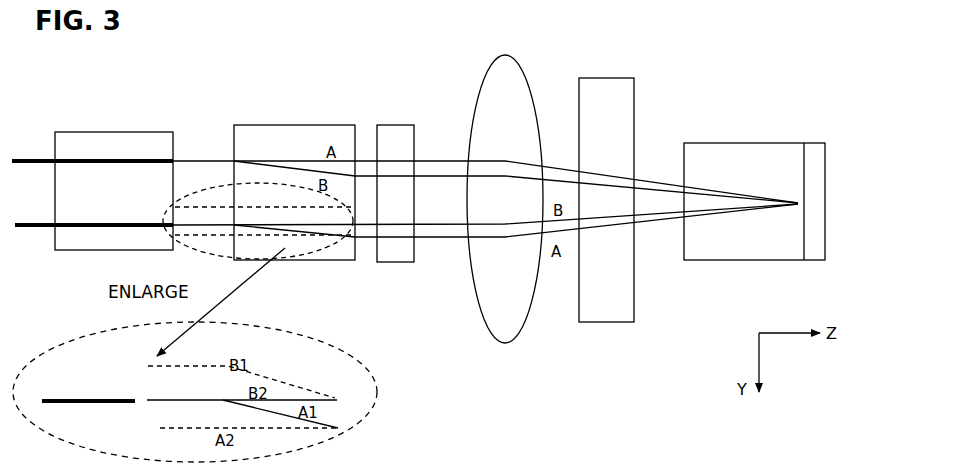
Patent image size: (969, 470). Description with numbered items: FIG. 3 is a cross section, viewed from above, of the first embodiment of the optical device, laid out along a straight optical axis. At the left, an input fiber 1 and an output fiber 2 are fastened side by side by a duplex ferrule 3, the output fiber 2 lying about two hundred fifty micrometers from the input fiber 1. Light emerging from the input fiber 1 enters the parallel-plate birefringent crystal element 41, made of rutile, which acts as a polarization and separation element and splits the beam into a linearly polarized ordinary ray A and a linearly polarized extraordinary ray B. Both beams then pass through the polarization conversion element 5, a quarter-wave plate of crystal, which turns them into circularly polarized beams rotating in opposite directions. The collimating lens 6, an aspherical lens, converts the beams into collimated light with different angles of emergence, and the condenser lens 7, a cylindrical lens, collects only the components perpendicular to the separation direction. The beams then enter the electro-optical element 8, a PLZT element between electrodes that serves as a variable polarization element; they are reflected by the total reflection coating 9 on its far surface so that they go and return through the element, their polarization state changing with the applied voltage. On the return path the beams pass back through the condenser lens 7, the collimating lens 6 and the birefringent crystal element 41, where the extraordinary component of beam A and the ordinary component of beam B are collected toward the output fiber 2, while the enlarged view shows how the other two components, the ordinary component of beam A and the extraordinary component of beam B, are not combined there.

The input fiber 1 is at (92, 144).
The output fiber 2 is at (94, 296).
The duplex ferrule 3 is at (114, 178).
The parallel-plate birefringent crystal element 41 is at (294, 180).
The polarization conversion element 5 is at (395, 209).
The collimating lens 6 is at (505, 190).
The condenser lens 7 is at (606, 187).
The electro-optical element 8 is at (752, 188).
The total reflection coating 9 is at (814, 219).